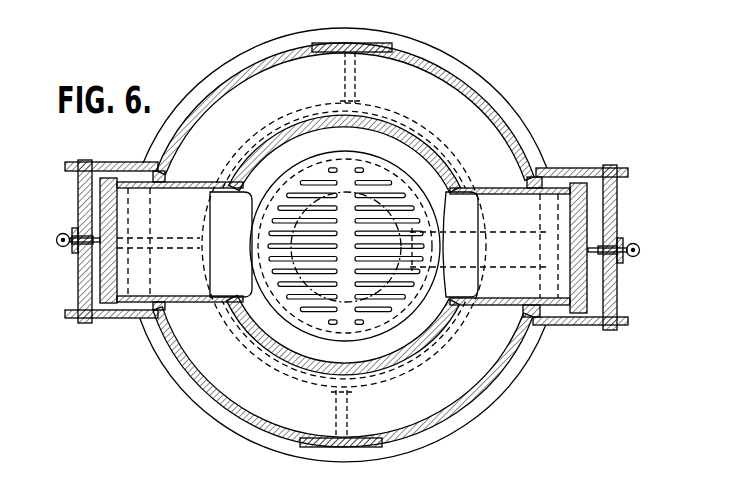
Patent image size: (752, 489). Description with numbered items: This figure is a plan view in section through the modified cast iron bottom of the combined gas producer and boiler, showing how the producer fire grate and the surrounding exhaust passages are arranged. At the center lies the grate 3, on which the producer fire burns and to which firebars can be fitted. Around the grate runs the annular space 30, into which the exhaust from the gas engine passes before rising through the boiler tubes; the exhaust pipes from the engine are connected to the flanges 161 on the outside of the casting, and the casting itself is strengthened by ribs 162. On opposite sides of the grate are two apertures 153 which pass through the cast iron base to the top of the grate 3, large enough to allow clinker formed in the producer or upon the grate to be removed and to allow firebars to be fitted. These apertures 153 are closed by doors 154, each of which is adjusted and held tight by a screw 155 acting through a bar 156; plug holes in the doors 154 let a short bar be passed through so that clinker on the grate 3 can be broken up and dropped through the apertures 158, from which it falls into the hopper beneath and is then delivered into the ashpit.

The grate 3 is at (345, 246).
The annular space 30 is at (346, 245).
The apertures 153 is at (343, 245).
The doors 154 is at (104, 272).
The screws 155 is at (76, 246).
The bars 156 is at (77, 203).
The apertures 158 is at (344, 244).
The flanges 161 is at (380, 45).
The ribs 162 is at (357, 87).